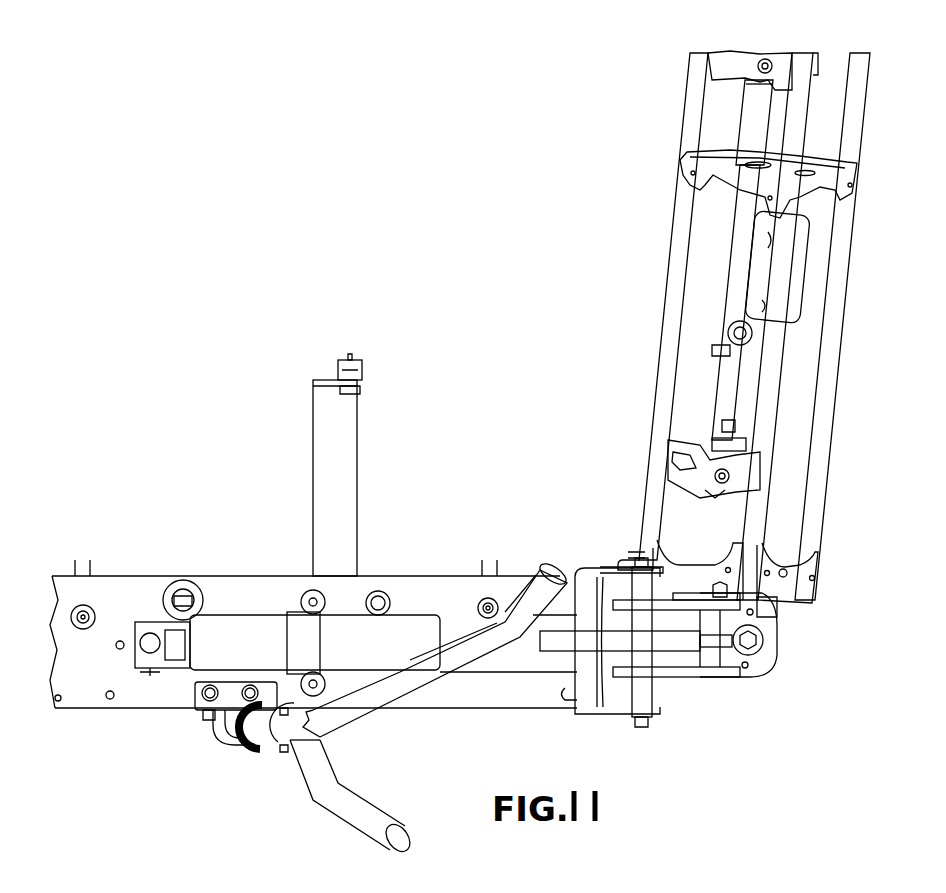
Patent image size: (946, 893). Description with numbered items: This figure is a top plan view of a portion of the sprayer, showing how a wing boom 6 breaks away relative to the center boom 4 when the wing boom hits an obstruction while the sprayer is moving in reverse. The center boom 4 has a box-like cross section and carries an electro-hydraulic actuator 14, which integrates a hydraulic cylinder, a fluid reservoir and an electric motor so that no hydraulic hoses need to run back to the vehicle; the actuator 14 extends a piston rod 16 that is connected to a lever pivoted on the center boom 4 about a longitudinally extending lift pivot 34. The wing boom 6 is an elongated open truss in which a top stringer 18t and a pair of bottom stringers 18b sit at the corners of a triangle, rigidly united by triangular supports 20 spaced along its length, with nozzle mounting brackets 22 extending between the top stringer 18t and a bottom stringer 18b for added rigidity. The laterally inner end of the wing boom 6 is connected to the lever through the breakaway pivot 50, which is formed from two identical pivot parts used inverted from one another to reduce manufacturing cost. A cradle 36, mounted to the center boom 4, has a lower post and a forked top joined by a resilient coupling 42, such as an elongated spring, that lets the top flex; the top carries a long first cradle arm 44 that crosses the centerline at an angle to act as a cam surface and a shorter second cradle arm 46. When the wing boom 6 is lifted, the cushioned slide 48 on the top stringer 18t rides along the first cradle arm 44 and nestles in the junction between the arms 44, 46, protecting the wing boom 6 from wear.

The center boom 4 is at (184, 575).
The wing boom 6 is at (848, 308).
The electro-hydraulic actuator 14 is at (265, 636).
The piston rod 16 is at (722, 640).
The top stringer 18t is at (800, 120).
The bottom stringers 18b is at (860, 357).
The triangular support 20 is at (712, 170).
The nozzle mounting bracket 22 is at (668, 480).
The lift pivot 34 is at (640, 665).
The cradle 36 is at (420, 645).
The resilient coupling 42 is at (250, 738).
The first cradle arm 44 is at (428, 680).
The second cradle arm 46 is at (332, 798).
The cushioned slide 48 is at (800, 243).
The breakaway pivot 50 is at (786, 639).